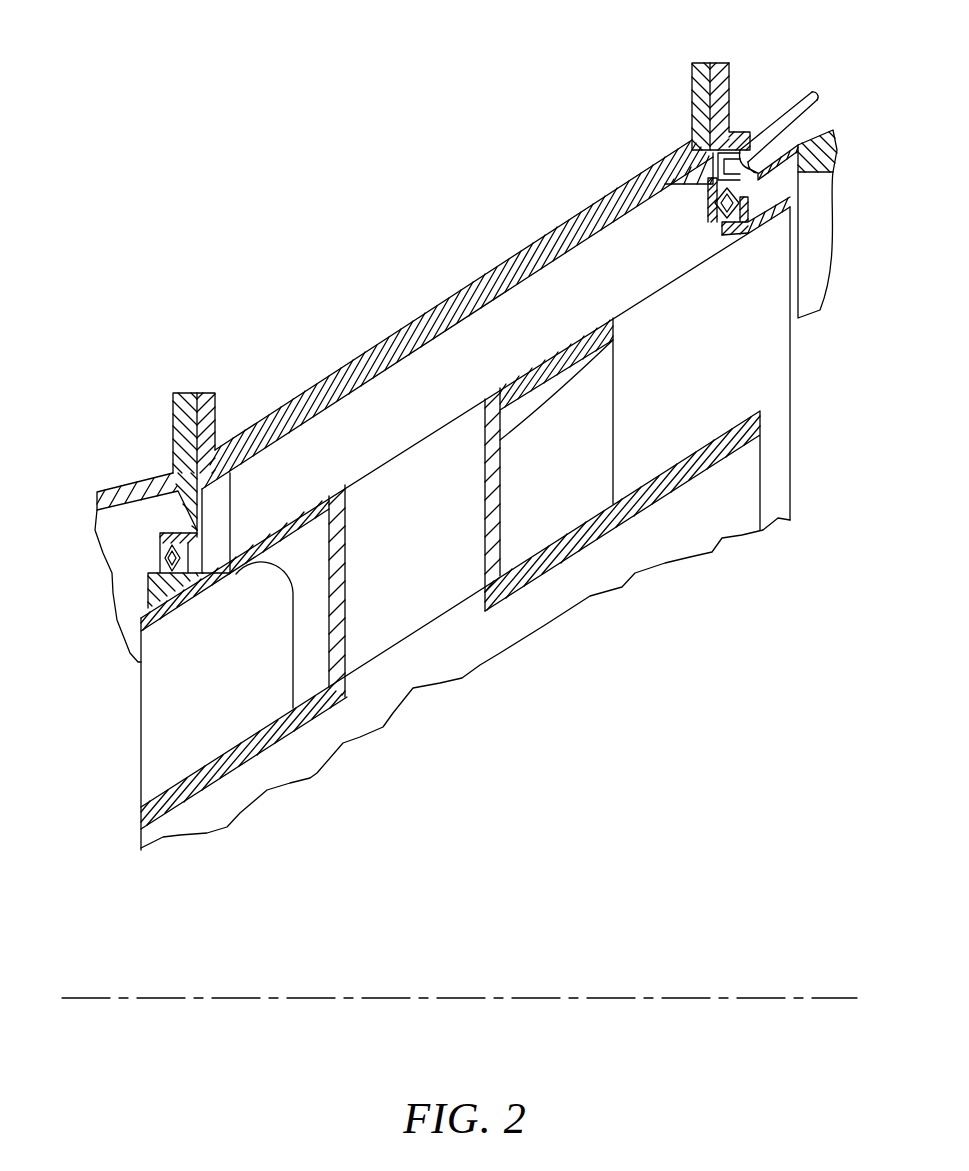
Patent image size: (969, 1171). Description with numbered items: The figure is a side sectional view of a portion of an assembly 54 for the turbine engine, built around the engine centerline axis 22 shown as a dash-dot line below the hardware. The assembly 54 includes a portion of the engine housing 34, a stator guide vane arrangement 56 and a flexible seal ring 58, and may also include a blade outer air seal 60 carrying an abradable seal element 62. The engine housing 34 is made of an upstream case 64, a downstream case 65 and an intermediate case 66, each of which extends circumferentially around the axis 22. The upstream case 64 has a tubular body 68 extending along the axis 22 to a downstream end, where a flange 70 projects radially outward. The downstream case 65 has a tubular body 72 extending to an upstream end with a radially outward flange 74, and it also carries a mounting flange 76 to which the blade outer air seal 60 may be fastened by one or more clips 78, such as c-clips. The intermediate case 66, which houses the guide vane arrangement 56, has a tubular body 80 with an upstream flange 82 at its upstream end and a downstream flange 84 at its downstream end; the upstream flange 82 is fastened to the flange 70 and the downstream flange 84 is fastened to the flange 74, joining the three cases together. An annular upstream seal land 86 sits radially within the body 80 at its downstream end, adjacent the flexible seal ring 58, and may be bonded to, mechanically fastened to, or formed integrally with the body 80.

The axis 22 is at (744, 996).
The engine housing 34 is at (565, 224).
The assembly 54 is at (228, 228).
The stator guide vane arrangement 56 is at (137, 752).
The flexible seal ring 58 is at (718, 218).
The blade outer air seal 60 is at (838, 128).
The abradable seal element 62 is at (835, 162).
The upstream case 64 is at (125, 485).
The downstream case 65 is at (790, 94).
The intermediate case 66 is at (518, 256).
The tubular body 68 is at (100, 503).
The flange 70 is at (177, 403).
The tubular body 72 is at (814, 95).
The flange 74 is at (717, 63).
The mounting flange 76 is at (757, 146).
The clip 78 is at (714, 157).
The tubular body 80 is at (391, 350).
The upstream flange 82 is at (214, 418).
The downstream flange 84 is at (700, 88).
The upstream seal land 86 is at (716, 172).